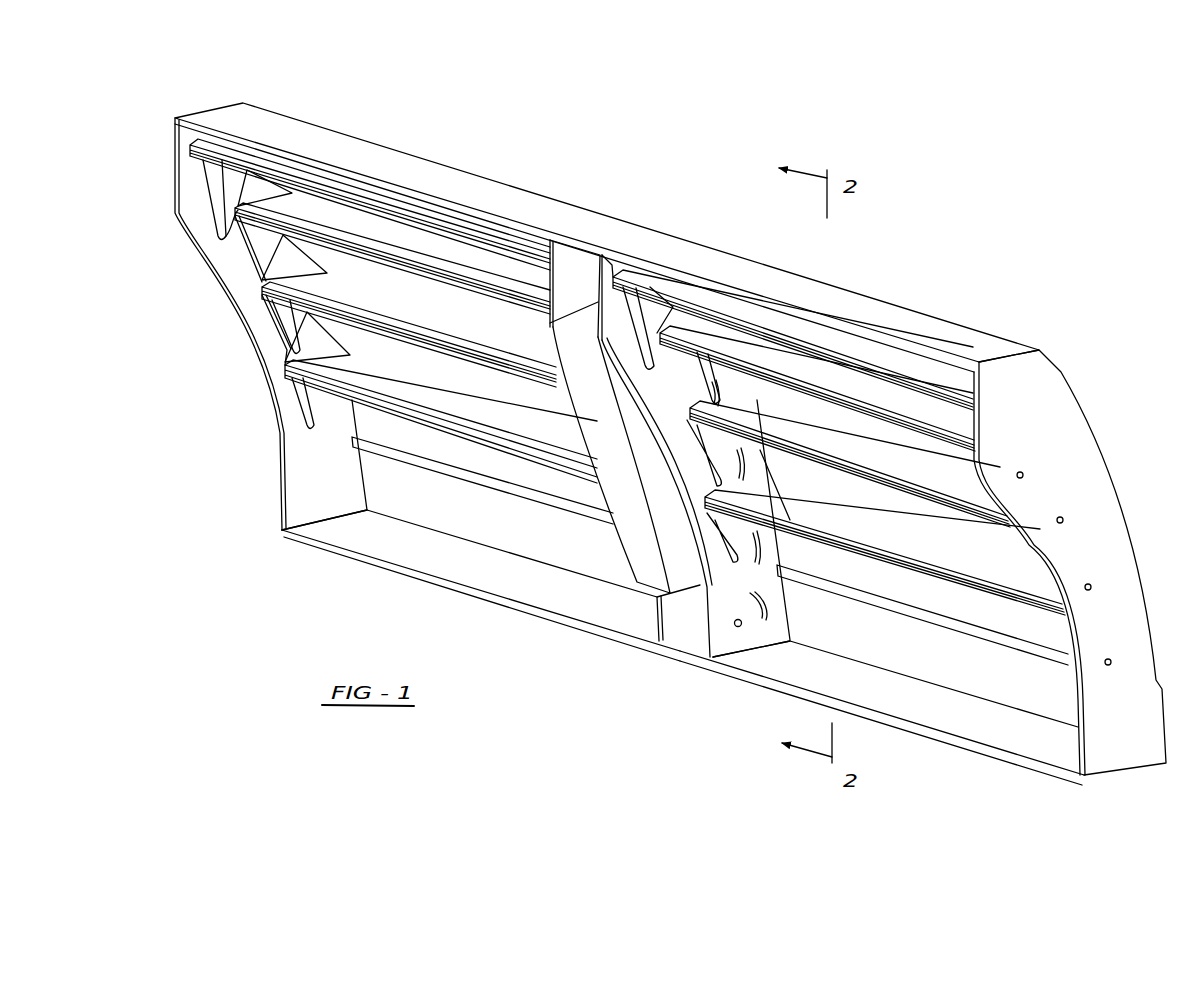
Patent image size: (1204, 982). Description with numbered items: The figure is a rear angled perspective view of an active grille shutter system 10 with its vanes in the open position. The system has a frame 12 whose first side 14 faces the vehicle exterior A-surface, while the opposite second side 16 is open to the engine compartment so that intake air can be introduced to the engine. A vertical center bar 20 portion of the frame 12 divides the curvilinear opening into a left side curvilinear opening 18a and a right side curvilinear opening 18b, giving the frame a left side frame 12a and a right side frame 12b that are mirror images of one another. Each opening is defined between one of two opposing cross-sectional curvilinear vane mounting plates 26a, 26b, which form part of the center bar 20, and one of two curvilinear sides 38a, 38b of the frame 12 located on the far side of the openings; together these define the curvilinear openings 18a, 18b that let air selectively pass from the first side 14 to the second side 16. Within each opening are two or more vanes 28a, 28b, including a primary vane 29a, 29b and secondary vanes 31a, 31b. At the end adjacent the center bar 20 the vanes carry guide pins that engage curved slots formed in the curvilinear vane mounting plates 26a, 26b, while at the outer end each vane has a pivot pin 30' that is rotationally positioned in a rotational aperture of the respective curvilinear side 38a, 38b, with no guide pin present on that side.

The active grille shutter system 10 is at (1047, 152).
The frame 12 is at (555, 147).
The left side frame 12a is at (951, 265).
The right side frame 12b is at (379, 119).
The first side 14 is at (1154, 416).
The second side 16 is at (527, 650).
The left side curvilinear opening 18a is at (977, 653).
The right side curvilinear opening 18b is at (470, 493).
The center bar 20 is at (585, 279).
The curvilinear vane mounting plate 26a is at (560, 257).
The curvilinear vane mounting plate 26b is at (613, 264).
The vanes 28a is at (1003, 616).
The vanes 28b is at (232, 325).
The primary vane 29a is at (827, 437).
The primary vane 29b is at (360, 302).
The pivot pin 30' is at (1106, 547).
The secondary vanes 31a is at (907, 400).
The secondary vanes 31b is at (400, 243).
The curvilinear side 38a is at (1040, 399).
The curvilinear side 38b is at (200, 207).